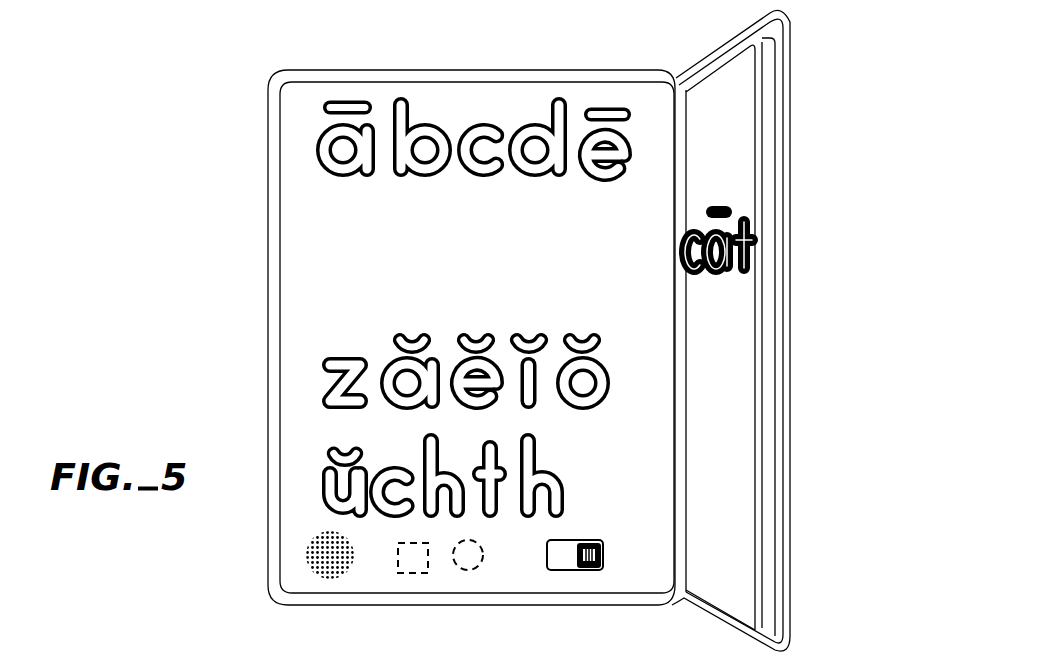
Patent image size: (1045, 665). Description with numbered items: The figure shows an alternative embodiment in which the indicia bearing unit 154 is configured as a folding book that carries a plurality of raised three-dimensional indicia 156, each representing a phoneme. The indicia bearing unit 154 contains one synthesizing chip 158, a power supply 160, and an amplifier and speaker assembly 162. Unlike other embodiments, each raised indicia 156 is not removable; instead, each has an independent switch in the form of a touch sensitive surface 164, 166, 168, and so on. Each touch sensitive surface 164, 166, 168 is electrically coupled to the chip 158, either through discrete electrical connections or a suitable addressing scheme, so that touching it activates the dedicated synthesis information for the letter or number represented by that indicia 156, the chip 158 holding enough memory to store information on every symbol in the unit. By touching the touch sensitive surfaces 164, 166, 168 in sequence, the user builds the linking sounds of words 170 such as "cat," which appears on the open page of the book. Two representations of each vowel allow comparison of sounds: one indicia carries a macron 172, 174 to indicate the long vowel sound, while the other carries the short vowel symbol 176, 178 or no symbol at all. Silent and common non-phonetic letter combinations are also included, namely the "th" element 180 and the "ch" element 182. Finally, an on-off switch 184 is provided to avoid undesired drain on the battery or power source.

The indicia bearing unit 154 is at (233, 62).
The raised three-dimensional indicia 156 is at (527, 122).
The synthesizing chip 158 is at (416, 578).
The power supply 160 is at (472, 570).
The amplifier and speaker assembly 162 is at (305, 558).
The touch sensitive surface 164 is at (316, 150).
The touch sensitive surface 166 is at (372, 176).
The touch sensitive surface 168 is at (472, 175).
The word 170 is at (740, 180).
The macron 172 is at (608, 104).
The macron 174 is at (343, 100).
The short vowel symbol 176 is at (412, 337).
The short vowel symbol 178 is at (478, 336).
The "th" element 180 is at (506, 518).
The "ch" element 182 is at (422, 512).
The on-off switch 184 is at (595, 570).